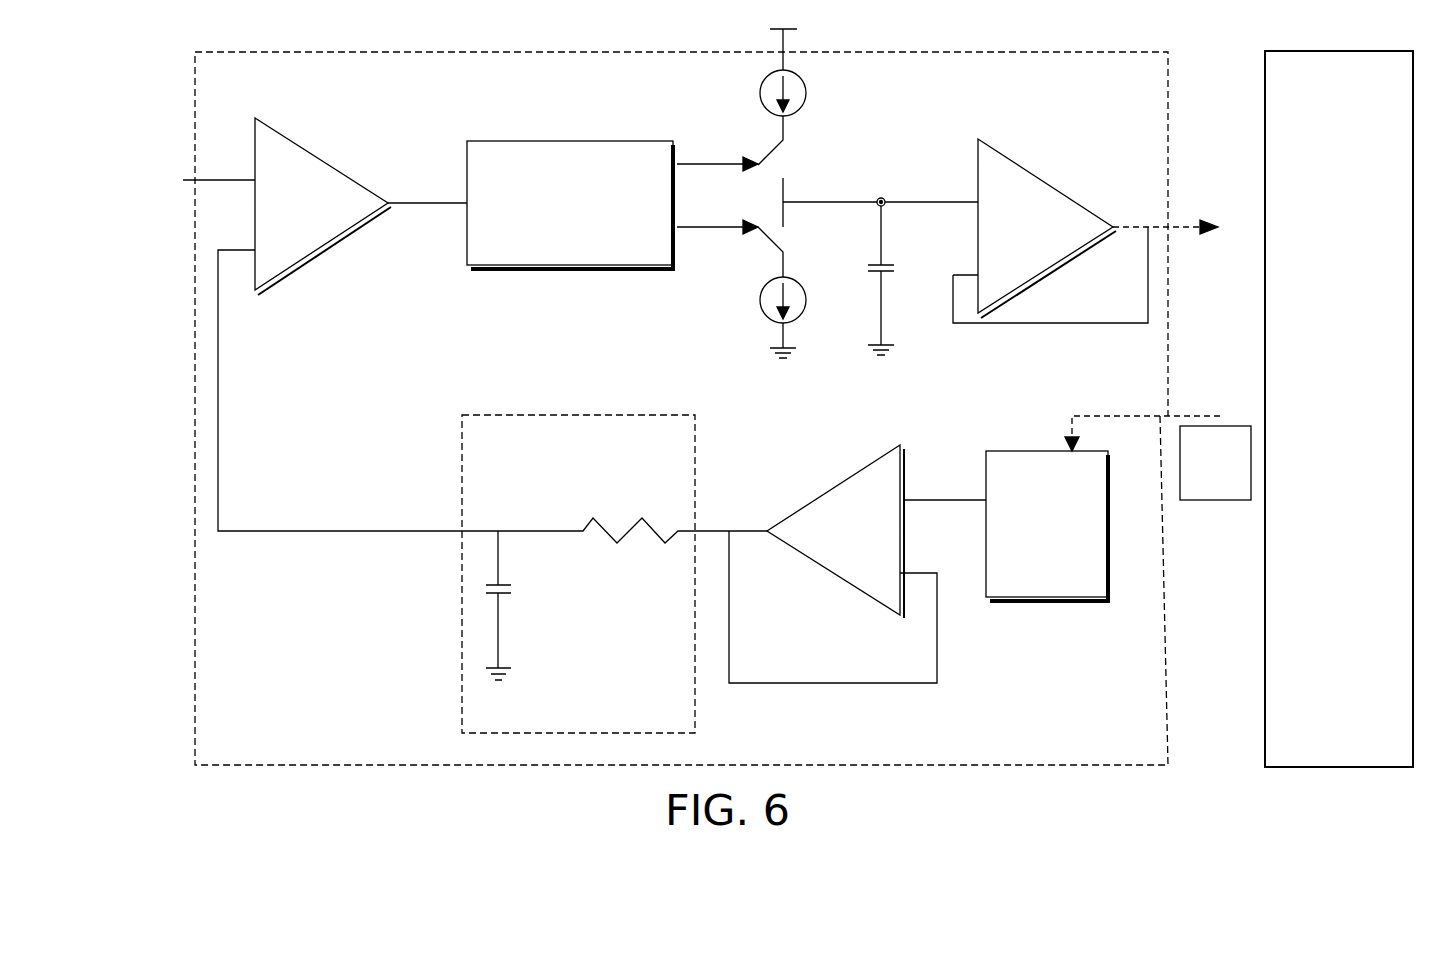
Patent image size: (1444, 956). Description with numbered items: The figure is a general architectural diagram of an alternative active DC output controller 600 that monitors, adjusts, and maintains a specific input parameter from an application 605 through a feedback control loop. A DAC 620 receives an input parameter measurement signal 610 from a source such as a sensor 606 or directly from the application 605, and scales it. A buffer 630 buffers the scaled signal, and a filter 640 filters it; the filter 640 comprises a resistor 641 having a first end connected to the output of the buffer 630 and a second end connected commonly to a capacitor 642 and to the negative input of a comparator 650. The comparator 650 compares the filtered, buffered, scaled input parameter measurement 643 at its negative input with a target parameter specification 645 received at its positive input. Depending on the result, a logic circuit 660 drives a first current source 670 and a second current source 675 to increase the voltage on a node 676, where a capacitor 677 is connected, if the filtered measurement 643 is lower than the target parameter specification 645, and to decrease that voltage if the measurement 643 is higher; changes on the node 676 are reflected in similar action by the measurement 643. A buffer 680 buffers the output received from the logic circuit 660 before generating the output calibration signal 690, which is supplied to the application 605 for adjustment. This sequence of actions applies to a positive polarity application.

The active DC output controller 600 is at (890, 765).
The application 605 is at (1339, 409).
The sensor 606 is at (1215, 463).
The input parameter measurement signal 610 is at (1134, 397).
The DAC 620 is at (1005, 526).
The buffer 630 is at (816, 564).
The filter 640 is at (578, 574).
The resistor 641 is at (578, 515).
The capacitor 642 is at (522, 605).
The filtered input parameter measurement 643 is at (340, 390).
The target parameter specification 645 is at (166, 160).
The comparator 650 is at (361, 206).
The logic circuit 660 is at (612, 205).
The first current source 670 is at (803, 99).
The second current source 675 is at (805, 291).
The node 676 is at (913, 186).
The capacitor 677 is at (903, 280).
The buffer 680 is at (1050, 231).
The output calibration signal 690 is at (1187, 190).